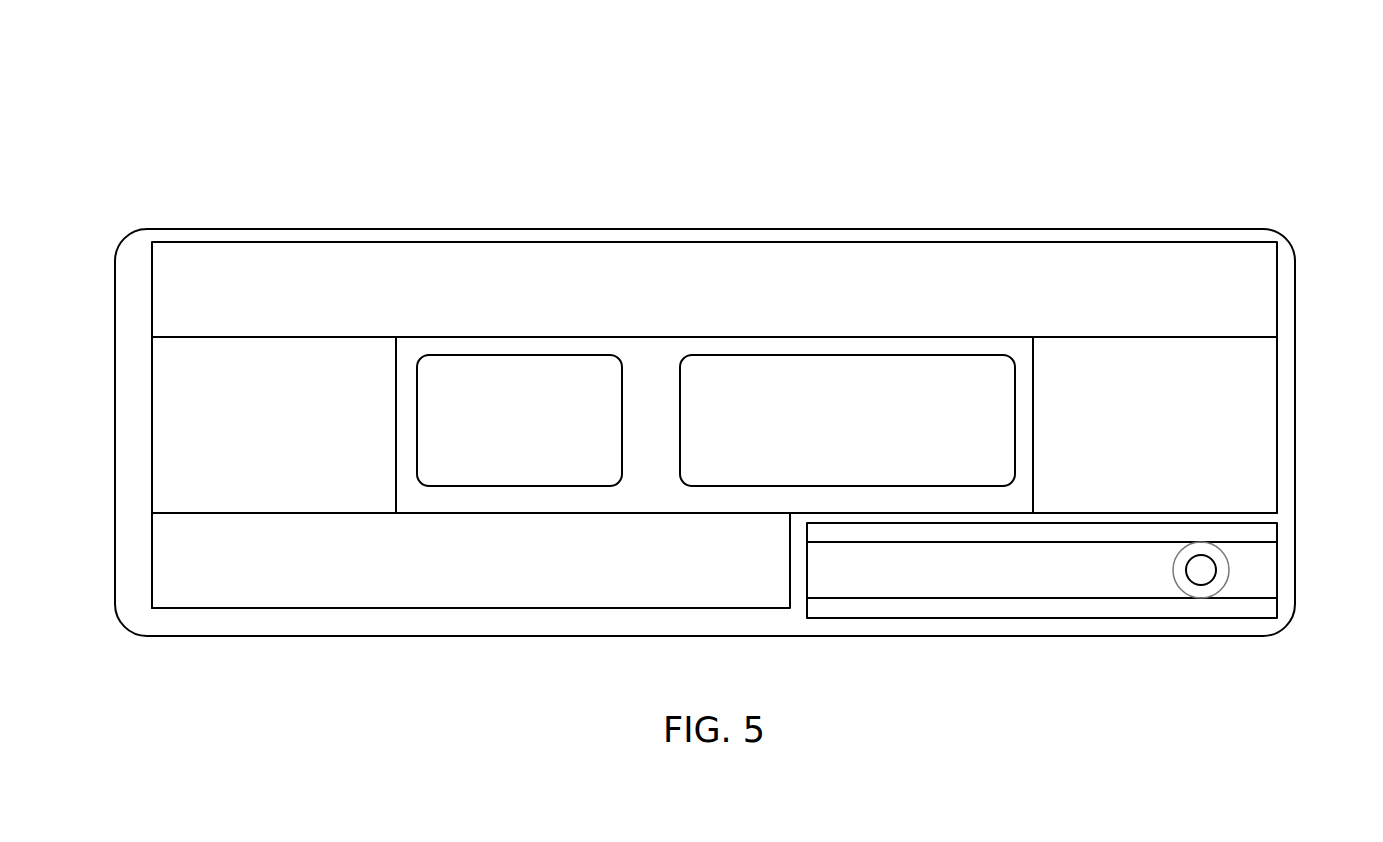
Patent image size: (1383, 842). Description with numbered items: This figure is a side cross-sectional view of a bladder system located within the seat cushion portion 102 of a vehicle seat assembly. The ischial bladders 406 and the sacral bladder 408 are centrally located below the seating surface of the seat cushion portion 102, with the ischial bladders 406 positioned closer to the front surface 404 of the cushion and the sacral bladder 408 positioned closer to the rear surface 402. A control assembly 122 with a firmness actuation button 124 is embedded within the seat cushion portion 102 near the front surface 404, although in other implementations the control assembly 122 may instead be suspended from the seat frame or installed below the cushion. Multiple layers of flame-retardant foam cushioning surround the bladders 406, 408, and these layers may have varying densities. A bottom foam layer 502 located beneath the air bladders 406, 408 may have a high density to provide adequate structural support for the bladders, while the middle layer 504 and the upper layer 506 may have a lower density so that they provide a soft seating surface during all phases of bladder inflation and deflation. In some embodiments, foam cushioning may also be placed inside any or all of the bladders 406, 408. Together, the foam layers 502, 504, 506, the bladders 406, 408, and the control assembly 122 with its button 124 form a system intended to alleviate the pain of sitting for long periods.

The seat cushion portion 102 is at (100, 142).
The control assembly 122 is at (1067, 565).
The firmness actuation button 124 is at (1210, 578).
The rear surface 402 is at (113, 380).
The front surface 404 is at (1297, 400).
The ischial bladders 406 is at (873, 420).
The sacral bladder 408 is at (498, 410).
The bottom foam layer 502 is at (442, 582).
The middle foam layer 504 is at (198, 447).
The upper foam layer 506 is at (1047, 272).